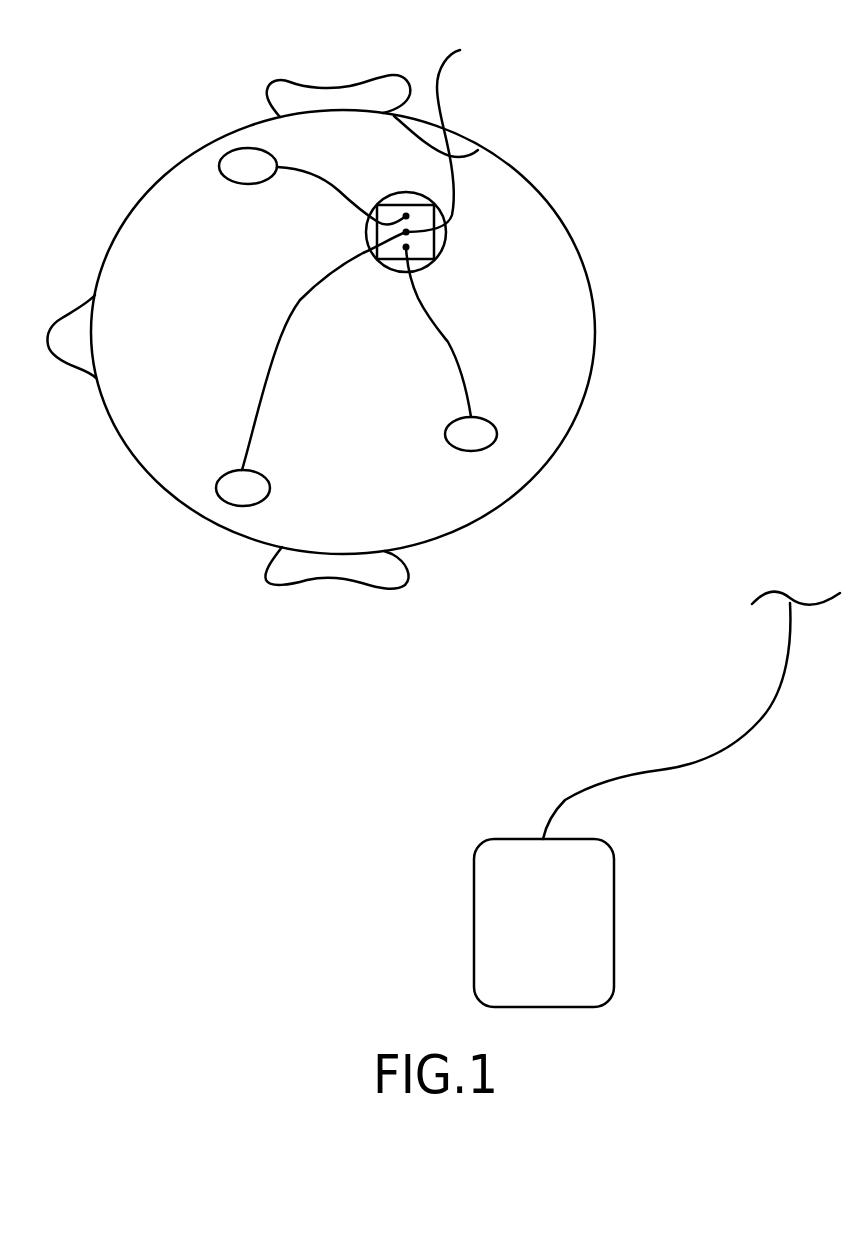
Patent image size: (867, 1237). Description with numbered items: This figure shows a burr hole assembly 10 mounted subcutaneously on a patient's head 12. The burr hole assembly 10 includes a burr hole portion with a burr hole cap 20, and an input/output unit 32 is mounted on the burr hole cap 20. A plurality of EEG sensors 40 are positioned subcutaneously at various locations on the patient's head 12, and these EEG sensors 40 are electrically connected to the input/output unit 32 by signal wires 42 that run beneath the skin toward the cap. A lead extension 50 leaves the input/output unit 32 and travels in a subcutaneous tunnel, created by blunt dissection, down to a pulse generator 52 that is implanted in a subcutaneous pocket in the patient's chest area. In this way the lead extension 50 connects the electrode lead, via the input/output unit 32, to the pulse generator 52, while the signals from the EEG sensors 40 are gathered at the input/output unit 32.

The burr hole assembly 10 is at (487, 247).
The patient's head 12 is at (150, 476).
The burr hole cap 20 is at (377, 233).
The input/output unit 32 is at (406, 216).
The EEG sensors 40 is at (496, 434).
The signal wires 42 is at (452, 340).
The lead extension 50 is at (673, 767).
The pulse generator 52 is at (614, 927).